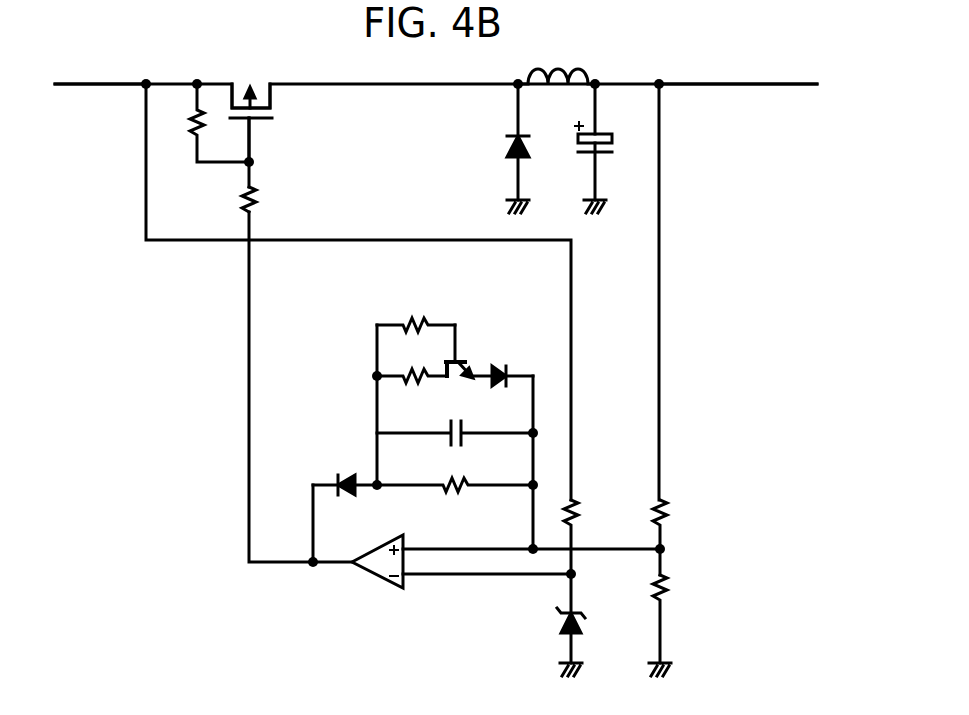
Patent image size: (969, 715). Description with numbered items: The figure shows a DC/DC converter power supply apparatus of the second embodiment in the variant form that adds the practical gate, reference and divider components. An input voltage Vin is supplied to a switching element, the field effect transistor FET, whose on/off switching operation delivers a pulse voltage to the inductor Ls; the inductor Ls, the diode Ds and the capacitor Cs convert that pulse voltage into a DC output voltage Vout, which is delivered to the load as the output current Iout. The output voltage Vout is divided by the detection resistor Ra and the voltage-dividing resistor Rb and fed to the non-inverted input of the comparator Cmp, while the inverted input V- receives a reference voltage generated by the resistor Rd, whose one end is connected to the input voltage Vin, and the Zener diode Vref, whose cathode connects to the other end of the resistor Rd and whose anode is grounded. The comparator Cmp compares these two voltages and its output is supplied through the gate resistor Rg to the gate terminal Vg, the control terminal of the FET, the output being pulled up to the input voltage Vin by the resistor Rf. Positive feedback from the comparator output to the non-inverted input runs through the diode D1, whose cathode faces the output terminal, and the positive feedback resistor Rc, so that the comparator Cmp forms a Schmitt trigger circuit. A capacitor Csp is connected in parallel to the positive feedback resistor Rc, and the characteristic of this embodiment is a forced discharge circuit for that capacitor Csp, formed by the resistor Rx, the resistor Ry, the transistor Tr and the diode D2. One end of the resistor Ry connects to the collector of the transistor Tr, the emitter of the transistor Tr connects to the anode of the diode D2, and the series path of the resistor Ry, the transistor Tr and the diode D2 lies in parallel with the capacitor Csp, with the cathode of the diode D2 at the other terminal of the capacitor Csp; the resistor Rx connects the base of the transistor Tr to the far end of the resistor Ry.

The input voltage Vin is at (100, 71).
The output voltage Vout is at (738, 71).
The output current Iout is at (776, 100).
The field effect transistor FET is at (251, 85).
The gate terminal Vg is at (267, 140).
The resistor Rf is at (207, 123).
The gate resistor Rg is at (265, 202).
The inductor Ls is at (556, 92).
The diode Ds is at (503, 148).
The capacitor Cs is at (582, 148).
The resistor Rx is at (416, 312).
The resistor Ry is at (412, 361).
The transistor Tr is at (469, 356).
The diode D2 is at (512, 363).
The capacitor Csp is at (455, 418).
The positive feedback resistor Rc is at (455, 471).
The diode D1 is at (345, 472).
The comparator Cmp is at (376, 570).
The V− terminal V- is at (487, 562).
The resistor Rd is at (587, 536).
The detection resistor Ra is at (678, 536).
The voltage-dividing resistor Rb is at (676, 624).
The Zener diode Vref is at (596, 625).